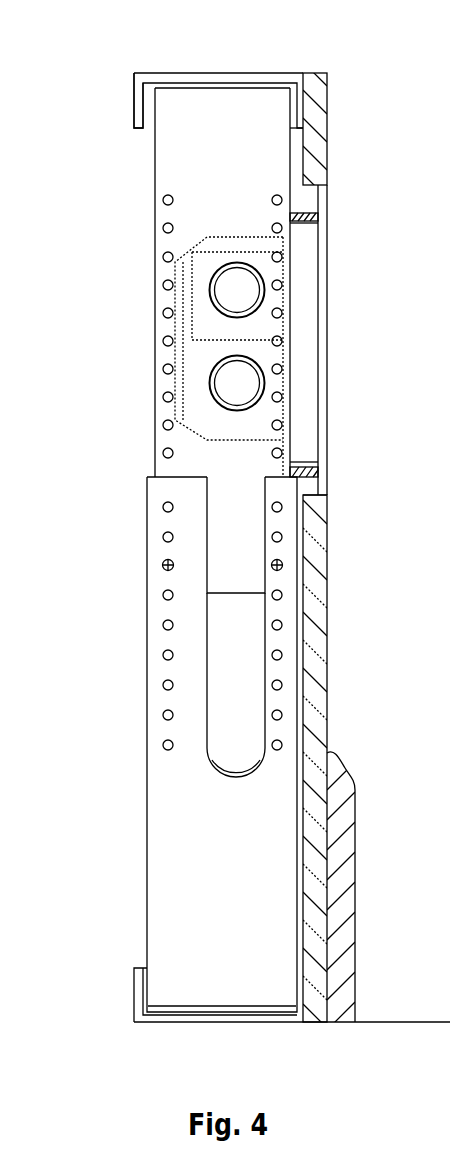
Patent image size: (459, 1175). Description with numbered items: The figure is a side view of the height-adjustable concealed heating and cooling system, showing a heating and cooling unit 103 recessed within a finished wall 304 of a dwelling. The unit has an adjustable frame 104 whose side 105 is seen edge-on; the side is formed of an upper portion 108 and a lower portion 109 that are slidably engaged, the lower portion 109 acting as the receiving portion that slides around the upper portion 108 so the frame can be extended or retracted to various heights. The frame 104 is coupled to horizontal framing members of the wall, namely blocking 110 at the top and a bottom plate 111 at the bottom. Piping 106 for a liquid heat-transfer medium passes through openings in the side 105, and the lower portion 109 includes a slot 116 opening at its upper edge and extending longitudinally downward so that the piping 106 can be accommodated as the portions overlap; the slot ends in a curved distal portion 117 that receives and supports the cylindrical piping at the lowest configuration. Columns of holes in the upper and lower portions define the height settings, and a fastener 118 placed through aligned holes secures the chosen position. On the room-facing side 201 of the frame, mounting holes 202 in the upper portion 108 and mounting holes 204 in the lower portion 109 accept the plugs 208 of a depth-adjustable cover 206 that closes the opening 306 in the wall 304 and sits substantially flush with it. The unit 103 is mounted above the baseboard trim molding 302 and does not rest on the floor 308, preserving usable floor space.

The heating and cooling unit 103 is at (352, 302).
The adjustable frame 104 is at (162, 453).
The side 105 is at (163, 508).
The piping 106 is at (210, 290).
The upper portion 108 is at (227, 520).
The lower portion 109 is at (182, 875).
The blocking 110 is at (133, 105).
The bottom plate 111 is at (135, 1012).
The slot 116 is at (207, 653).
The curved distal portion 117 is at (222, 754).
The fastener 118 is at (163, 565).
The room-facing side 201 is at (300, 173).
The mounting holes 202 is at (313, 223).
The mounting holes 204 is at (312, 462).
The depth-adjustable cover 206 is at (328, 362).
The plugs 208 is at (313, 217).
The baseboard trim molding 302 is at (348, 830).
The wall 304 is at (318, 117).
The opening 306 is at (328, 507).
The floor 308 is at (407, 1020).